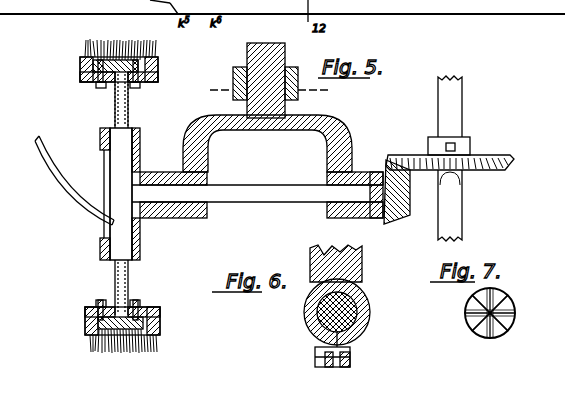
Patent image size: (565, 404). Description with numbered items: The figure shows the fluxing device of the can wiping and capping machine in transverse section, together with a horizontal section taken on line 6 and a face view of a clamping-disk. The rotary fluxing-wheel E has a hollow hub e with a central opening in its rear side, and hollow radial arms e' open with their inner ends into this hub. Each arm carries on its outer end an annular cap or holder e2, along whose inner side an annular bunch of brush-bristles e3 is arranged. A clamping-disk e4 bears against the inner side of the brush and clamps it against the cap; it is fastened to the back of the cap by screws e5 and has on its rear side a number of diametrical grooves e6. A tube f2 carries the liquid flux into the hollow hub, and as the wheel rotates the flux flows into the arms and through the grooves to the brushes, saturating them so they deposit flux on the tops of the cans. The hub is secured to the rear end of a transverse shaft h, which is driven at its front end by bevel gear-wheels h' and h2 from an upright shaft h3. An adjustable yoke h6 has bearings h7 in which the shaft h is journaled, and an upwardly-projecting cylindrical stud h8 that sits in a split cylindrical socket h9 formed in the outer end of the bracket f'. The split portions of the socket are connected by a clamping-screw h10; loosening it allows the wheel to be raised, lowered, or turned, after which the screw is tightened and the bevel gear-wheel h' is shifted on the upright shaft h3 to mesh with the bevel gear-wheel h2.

In FIG. 5, the rotary fluxing-wheel E is at (147, 124).
In FIG. 5, the hub of the fluxing-wheel e is at (121, 194).
In FIG. 5, the hollow radial arms e' is at (103, 193).
In FIG. 5, the annular cap or holder e2 is at (84, 76).
In FIG. 5, the brush-bristles e3 is at (84, 47).
In FIG. 5, the clamping-disk e4 is at (117, 64).
In FIG. 5, the screws e5 is at (101, 88).
In FIG. 5, the diametrical grooves e6 is at (140, 86).
In FIG. 5, the tube f2 is at (72, 184).
In FIG. 6, the bracket f' is at (343, 263).
In FIG. 5, the transverse shaft h is at (257, 182).
In FIG. 5, the bevel gear-wheel h' is at (450, 152).
In FIG. 5, the bevel gear-wheel h2 is at (405, 220).
In FIG. 5, the upright shaft h3 is at (462, 210).
In FIG. 5, the adjustable yoke h6 is at (252, 128).
In FIG. 5, the bearings h7 is at (190, 218).
In FIG. 5, the cylindrical stud h8 is at (262, 48).
In FIG. 5, the split cylindrical socket h9 is at (238, 67).
In FIG. 6, the clamping-screw h10 is at (315, 352).
In FIG. 5, the section line 6 is at (265, 91).